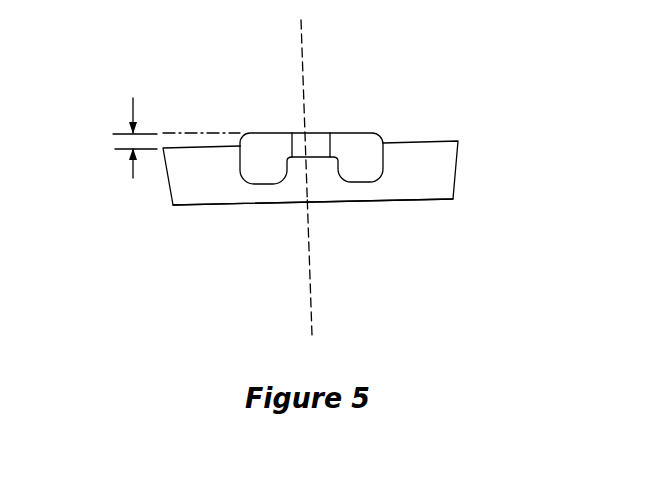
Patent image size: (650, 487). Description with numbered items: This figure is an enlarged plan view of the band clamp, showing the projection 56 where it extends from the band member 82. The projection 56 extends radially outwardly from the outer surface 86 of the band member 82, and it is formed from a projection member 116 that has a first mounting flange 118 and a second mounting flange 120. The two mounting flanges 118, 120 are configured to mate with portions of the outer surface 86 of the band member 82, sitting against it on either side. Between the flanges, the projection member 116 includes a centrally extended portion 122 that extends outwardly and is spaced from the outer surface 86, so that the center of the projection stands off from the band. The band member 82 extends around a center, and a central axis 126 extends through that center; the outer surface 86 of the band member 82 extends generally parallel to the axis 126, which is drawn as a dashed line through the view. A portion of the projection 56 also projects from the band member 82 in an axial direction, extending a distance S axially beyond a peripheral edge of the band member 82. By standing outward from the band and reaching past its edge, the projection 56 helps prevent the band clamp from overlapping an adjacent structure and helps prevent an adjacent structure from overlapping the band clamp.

The projection 56 is at (240, 58).
The band member 82 is at (420, 199).
The outer surface 86 is at (440, 160).
The projection member 116 is at (361, 127).
The first mounting flange 118 is at (252, 148).
The second mounting flange 120 is at (382, 137).
The centrally extended portion 122 is at (305, 110).
The central axis 126 is at (307, 300).
The distance S is at (159, 138).